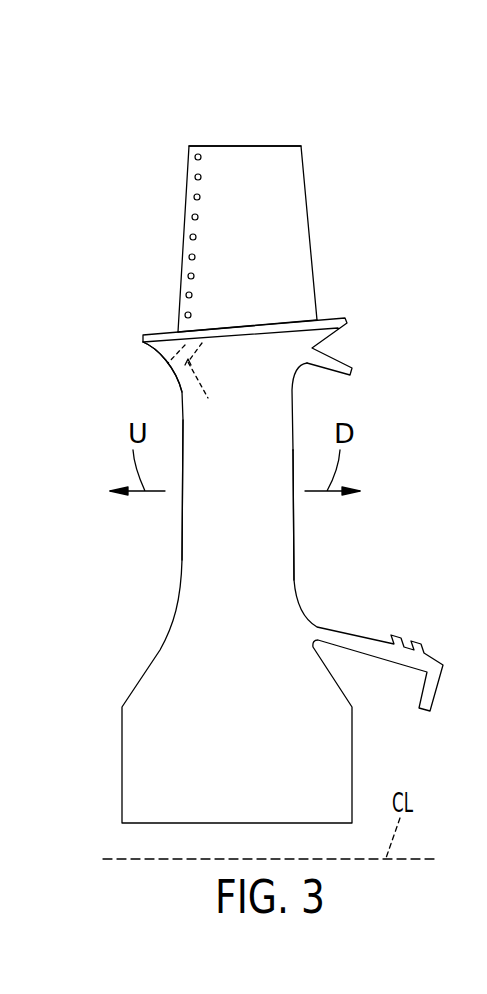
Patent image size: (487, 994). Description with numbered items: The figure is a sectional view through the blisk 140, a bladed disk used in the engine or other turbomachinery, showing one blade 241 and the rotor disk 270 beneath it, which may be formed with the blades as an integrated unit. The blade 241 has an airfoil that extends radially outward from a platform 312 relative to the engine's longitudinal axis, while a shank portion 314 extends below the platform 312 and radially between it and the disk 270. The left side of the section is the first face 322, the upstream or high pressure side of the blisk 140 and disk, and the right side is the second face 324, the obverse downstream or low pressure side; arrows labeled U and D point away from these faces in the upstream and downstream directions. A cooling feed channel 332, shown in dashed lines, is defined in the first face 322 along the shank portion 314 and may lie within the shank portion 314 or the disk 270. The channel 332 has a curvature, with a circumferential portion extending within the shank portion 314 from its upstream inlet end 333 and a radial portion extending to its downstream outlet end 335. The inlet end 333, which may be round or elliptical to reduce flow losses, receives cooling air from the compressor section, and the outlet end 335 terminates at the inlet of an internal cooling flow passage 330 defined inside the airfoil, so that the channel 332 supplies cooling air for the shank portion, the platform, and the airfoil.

The blisk 140 is at (271, 426).
The blade 241 is at (273, 155).
The internal cooling flow passage 330 is at (293, 205).
The downstream outlet end 335 is at (207, 327).
The platform 312 is at (322, 318).
The shank portion 314 is at (270, 378).
The upstream inlet end 333 is at (175, 367).
The cooling feed channel 332 is at (195, 386).
The first face 322 is at (180, 553).
The second face 324 is at (295, 565).
The rotor disk 270 is at (172, 657).